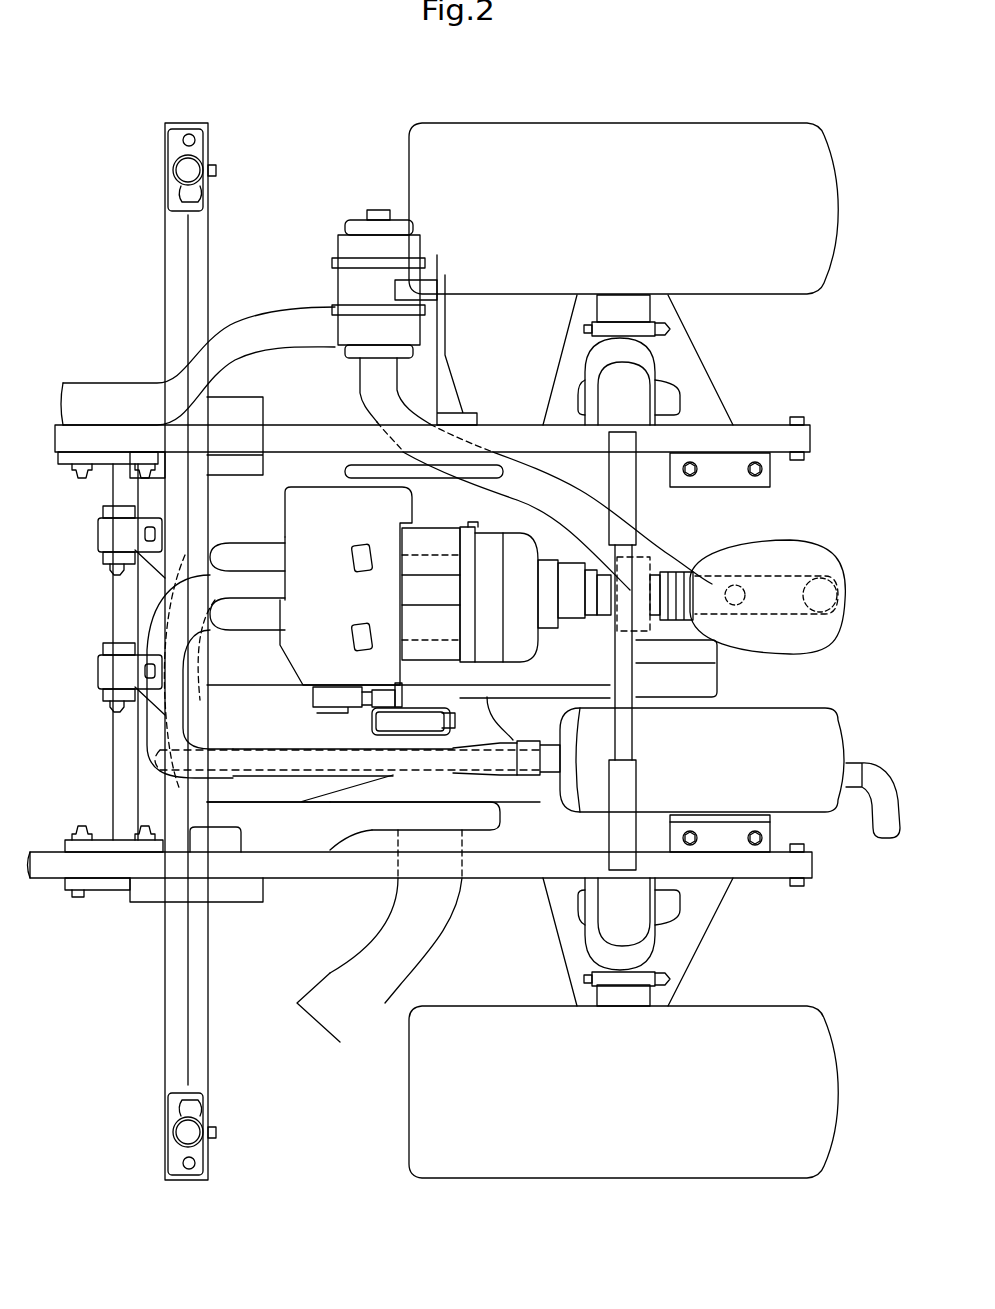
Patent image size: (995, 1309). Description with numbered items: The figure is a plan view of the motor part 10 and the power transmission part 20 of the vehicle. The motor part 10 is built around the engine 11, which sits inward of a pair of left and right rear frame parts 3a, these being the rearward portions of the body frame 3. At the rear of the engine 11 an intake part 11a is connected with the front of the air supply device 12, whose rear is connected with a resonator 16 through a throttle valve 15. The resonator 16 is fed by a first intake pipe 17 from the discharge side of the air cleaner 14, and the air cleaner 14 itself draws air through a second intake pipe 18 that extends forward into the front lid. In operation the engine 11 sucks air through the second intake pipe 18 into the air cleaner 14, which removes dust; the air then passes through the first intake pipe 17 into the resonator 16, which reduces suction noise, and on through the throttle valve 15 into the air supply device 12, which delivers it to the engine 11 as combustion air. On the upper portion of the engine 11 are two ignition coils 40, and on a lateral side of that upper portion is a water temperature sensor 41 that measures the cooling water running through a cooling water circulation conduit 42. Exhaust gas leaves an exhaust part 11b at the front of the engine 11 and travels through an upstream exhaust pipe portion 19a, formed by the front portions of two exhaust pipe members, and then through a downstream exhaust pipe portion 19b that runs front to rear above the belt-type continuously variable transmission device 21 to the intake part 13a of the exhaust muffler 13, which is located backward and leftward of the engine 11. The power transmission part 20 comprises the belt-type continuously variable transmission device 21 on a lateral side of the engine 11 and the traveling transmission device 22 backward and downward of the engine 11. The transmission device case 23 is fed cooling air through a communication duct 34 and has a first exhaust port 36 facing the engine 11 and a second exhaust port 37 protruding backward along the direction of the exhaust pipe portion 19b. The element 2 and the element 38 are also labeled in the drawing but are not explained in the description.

The wheel 2 is at (637, 130).
The body frame 3 is at (758, 878).
The rear frame part 3a is at (745, 428).
The motor part 10 is at (234, 518).
The engine 11 is at (325, 500).
The intake part 11a is at (391, 595).
The exhaust part 11b is at (283, 597).
The air supply device 12 is at (527, 640).
The exhaust muffler 13 is at (838, 740).
The intake part 13a is at (525, 780).
The air cleaner 14 is at (332, 288).
The throttle valve 15 is at (643, 622).
The resonator 16 is at (795, 548).
The first intake pipe 17 is at (518, 470).
The second intake pipe 18 is at (100, 385).
The upstream exhaust pipe portion 19a is at (136, 725).
The downstream exhaust pipe portion 19b is at (285, 814).
The power transmission part 20 is at (481, 913).
The belt-type continuously variable transmission device 21 is at (380, 832).
The traveling transmission device 22 is at (717, 678).
The transmission device case 23 is at (495, 805).
The communication duct 34 is at (382, 1012).
The first exhaust port 36 is at (444, 705).
The second exhaust port 37 is at (469, 728).
The mount 38 is at (373, 720).
The ignition coil 40 is at (352, 556).
The water temperature sensor 41 is at (387, 705).
The cooling water circulation conduit 42 is at (398, 690).